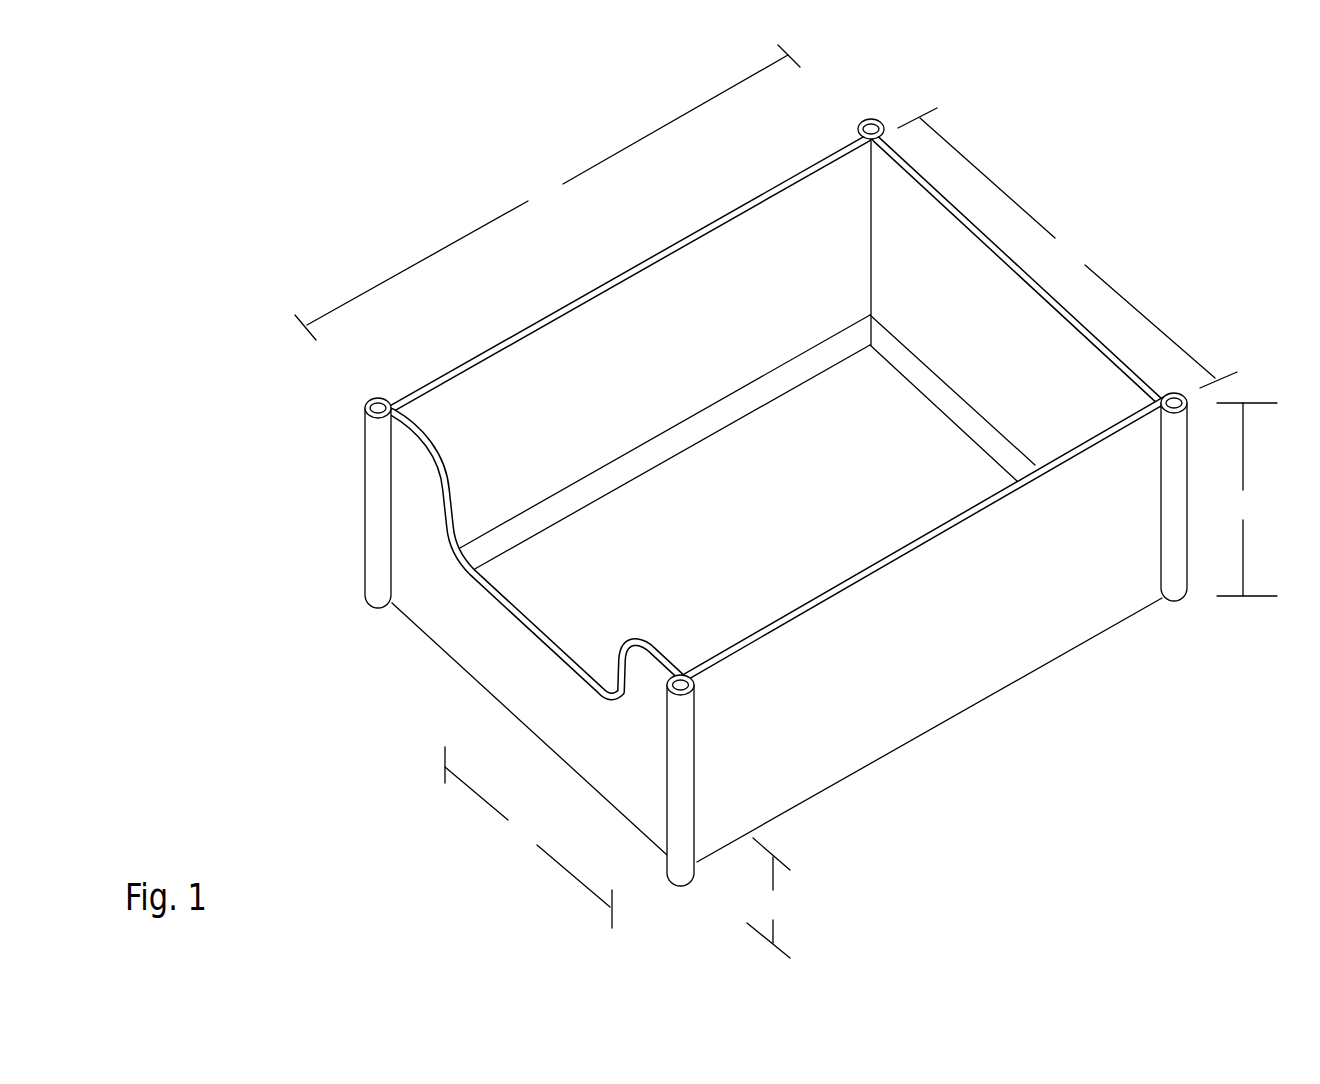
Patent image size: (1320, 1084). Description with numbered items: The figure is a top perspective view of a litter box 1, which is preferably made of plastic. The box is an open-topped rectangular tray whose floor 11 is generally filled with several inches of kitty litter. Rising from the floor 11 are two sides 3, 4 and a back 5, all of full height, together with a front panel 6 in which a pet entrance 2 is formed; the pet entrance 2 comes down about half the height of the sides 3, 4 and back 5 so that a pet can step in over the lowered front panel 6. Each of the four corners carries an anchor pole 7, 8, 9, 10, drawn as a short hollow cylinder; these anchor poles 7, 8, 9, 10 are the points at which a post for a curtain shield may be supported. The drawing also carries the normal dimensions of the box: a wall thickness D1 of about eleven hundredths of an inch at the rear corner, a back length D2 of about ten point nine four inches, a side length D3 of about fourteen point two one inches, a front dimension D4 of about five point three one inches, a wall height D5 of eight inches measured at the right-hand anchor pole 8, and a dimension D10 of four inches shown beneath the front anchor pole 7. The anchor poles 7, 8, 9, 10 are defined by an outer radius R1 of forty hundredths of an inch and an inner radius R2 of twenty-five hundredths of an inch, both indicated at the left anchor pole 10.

The litter box 1 is at (300, 514).
The pet entrance 2 is at (530, 651).
The side 3 is at (930, 707).
The side 4 is at (633, 338).
The back 5 is at (988, 365).
The front panel 6 is at (660, 810).
The anchor pole 7 is at (680, 872).
The anchor pole 8 is at (1173, 595).
The anchor pole 9 is at (875, 119).
The anchor pole 10 is at (386, 400).
The floor 11 is at (746, 527).
The radius R1 is at (373, 392).
The radius R2 is at (359, 405).
The dimension d1 D1 is at (846, 115).
The dimension d2 D2 is at (1067, 248).
The dimension d3 D3 is at (547, 192).
The dimension d4 D4 is at (528, 837).
The dimension d5 D5 is at (1247, 499).
The dimension d10 D10 is at (773, 898).